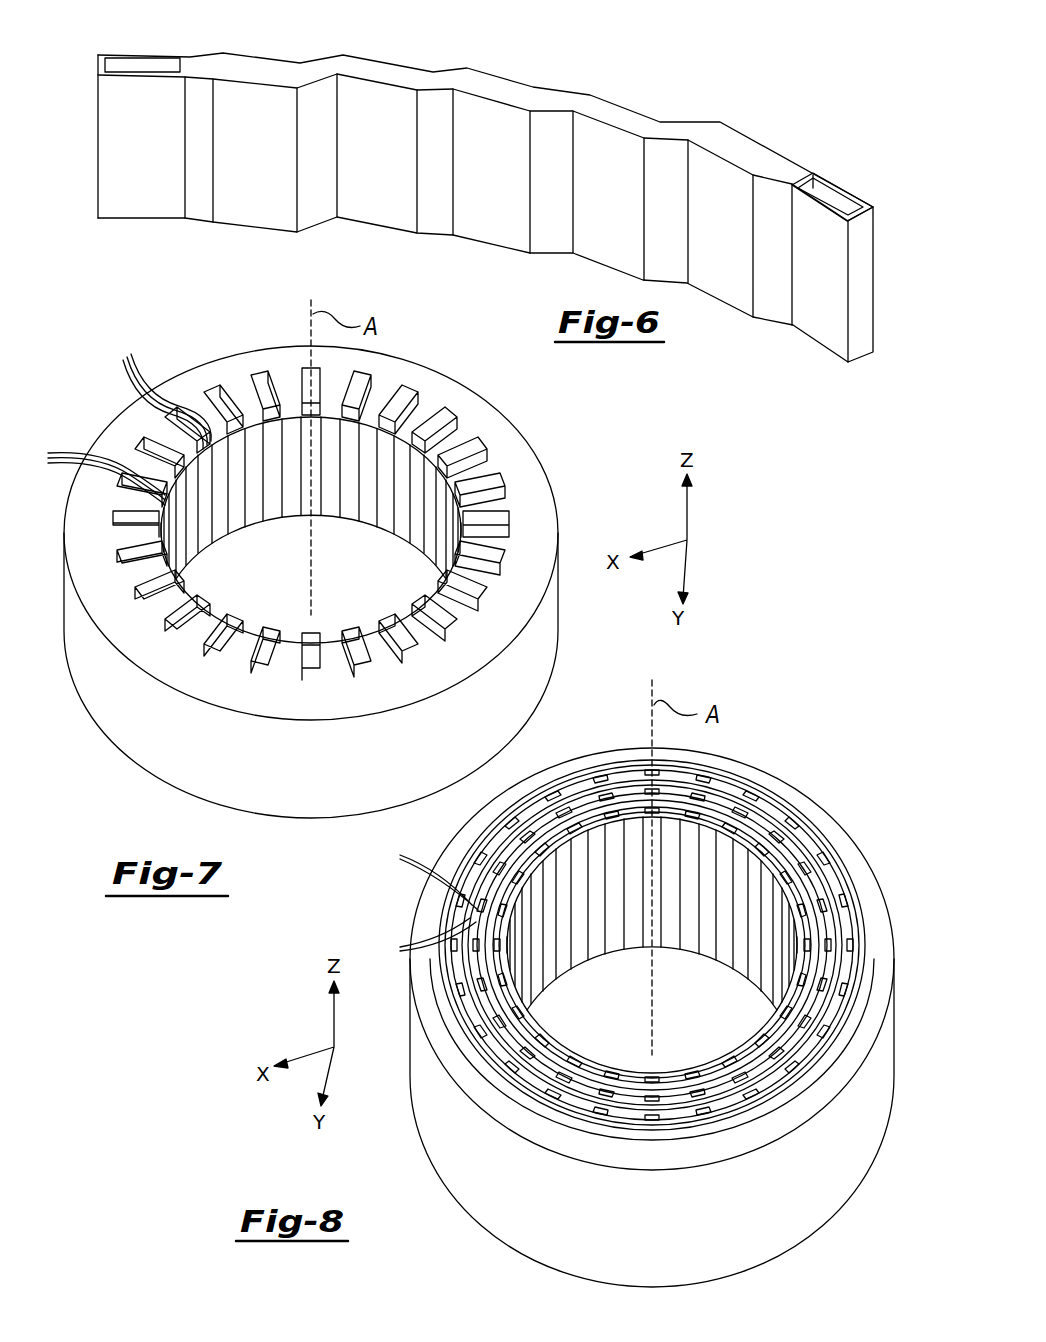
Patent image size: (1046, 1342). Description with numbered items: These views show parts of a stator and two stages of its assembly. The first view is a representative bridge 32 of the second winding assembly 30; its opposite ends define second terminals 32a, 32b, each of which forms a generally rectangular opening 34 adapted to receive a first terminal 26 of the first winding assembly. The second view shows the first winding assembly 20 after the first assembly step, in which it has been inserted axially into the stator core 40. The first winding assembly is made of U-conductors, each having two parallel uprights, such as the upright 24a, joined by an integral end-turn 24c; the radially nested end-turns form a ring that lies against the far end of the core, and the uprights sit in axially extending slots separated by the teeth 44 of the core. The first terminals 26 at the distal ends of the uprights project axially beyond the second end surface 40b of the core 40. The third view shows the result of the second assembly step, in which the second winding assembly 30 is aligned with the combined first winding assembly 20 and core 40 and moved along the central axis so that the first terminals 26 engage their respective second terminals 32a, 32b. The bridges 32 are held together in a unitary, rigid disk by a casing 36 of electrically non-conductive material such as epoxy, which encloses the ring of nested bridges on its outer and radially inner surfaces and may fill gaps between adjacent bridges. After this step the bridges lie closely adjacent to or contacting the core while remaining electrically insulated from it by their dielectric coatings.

In FIG. 7, the first winding assembly 20 is at (400, 563).
In FIG. 8, the first winding assembly 20 is at (746, 994).
In FIG. 7, the upright 24a is at (390, 488).
In FIG. 8, the upright 24a is at (717, 920).
In FIG. 7, the end-turn 24c is at (268, 517).
In FIG. 8, the end-turn 24c is at (618, 953).
In FIG. 7, the first terminals 26 is at (116, 417).
In FIG. 8, the first terminals 26 is at (423, 902).
In FIG. 8, the second winding assembly 30 is at (740, 778).
In FIG. 6, the bridge 32 is at (649, 99).
In FIG. 6, the second terminal 32a is at (132, 192).
In FIG. 6, the second terminal 32b is at (822, 318).
In FIG. 6, the rectangular opening 34 is at (145, 60).
In FIG. 8, the casing 36 is at (805, 825).
In FIG. 7, the stator core 40 is at (556, 454).
In FIG. 8, the stator core 40 is at (861, 1204).
In FIG. 7, the second end surface 40b is at (481, 416).
In FIG. 8, the second end surface 40b is at (860, 880).
In FIG. 7, the teeth 44 is at (200, 445).
In FIG. 8, the teeth 44 is at (562, 862).